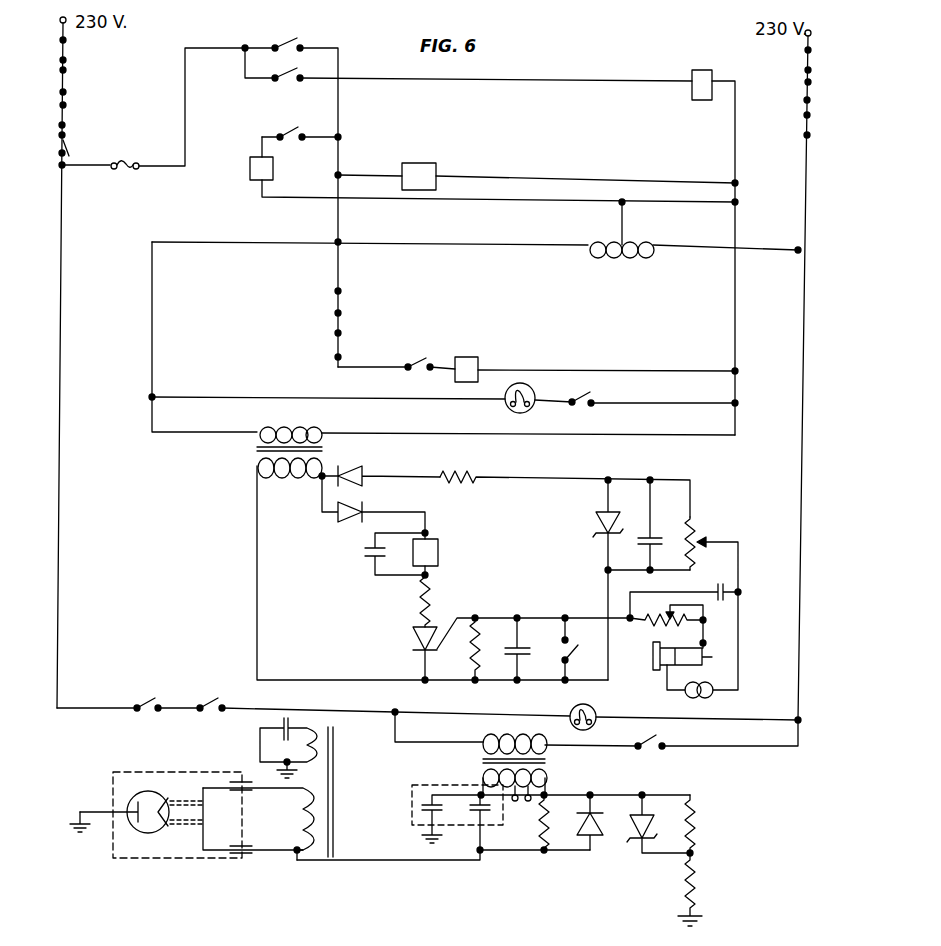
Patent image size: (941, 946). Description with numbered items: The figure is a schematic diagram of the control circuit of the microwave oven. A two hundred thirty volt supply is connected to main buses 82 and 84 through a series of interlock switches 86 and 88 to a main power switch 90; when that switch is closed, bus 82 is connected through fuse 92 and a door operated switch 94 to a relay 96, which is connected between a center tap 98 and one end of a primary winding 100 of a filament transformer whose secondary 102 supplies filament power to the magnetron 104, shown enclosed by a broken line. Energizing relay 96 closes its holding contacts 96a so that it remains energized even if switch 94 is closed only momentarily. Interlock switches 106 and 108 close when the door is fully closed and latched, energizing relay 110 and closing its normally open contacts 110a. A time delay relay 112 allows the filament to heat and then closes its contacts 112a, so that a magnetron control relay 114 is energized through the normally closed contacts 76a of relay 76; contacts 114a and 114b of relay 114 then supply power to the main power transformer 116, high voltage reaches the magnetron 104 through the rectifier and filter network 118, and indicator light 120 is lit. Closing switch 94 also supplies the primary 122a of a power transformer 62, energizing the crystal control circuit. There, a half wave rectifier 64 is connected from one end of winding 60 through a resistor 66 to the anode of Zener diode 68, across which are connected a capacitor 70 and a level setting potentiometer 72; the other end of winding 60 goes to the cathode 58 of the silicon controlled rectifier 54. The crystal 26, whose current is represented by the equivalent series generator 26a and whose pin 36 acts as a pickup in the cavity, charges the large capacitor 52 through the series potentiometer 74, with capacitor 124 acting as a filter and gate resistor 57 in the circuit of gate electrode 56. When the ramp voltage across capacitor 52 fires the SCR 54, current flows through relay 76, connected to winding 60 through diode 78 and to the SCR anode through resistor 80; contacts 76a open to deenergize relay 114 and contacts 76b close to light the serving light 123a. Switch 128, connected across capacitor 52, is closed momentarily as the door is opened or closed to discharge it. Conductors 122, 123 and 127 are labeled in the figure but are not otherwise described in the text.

The main bus 82 is at (62, 24).
The main bus 84 is at (812, 38).
The interlock switch 86 is at (66, 48).
The interlock switch 88 is at (804, 64).
The main power switch 90 is at (83, 141).
The fuse 92 is at (120, 171).
The door operated switch 94 is at (288, 40).
The relay 96 is at (694, 64).
The holding contacts 96a is at (284, 84).
The center tap 98 is at (626, 214).
The primary winding 100 is at (610, 240).
The interlock switch 106 is at (280, 132).
The relay 110 is at (250, 171).
The normally open contacts 110a is at (149, 698).
The time delay relay 112 is at (412, 164).
The contacts 112a is at (338, 345).
The magnetron control relay 114 is at (478, 359).
The contacts 114a is at (217, 698).
The contacts 114b is at (658, 748).
The main power transformer 116 is at (516, 756).
The rectifier and filter network 118 is at (591, 859).
The indicator light 120 is at (574, 716).
The power line 122 is at (802, 172).
The primary 122a is at (286, 428).
The power line 123 is at (62, 455).
The serving light 123a is at (508, 408).
The capacitor 124 is at (726, 590).
The conductor 127 is at (340, 262).
The switch 128 is at (736, 228).
The interlock switch 108 is at (338, 302).
The relay 76 is at (440, 552).
The normally closed contacts 76a is at (416, 362).
The normally open contacts 76b is at (578, 398).
The power transformer 62 is at (305, 446).
The half wave rectifier 64 is at (362, 472).
The resistor 66 is at (479, 474).
The winding 60 is at (432, 569).
The diode 78 is at (346, 524).
The resistor 80 is at (416, 602).
The silicon controlled rectifier 54 is at (414, 640).
The gate electrode 56 is at (450, 624).
The cathode 58 is at (420, 655).
The gate resistor 57 is at (468, 654).
The capacitor 52 is at (512, 636).
The Zener diode 68 is at (598, 531).
The capacitor 70 is at (646, 544).
The level setting potentiometer 72 is at (700, 524).
The series potentiometer 74 is at (652, 628).
The pin 36 is at (708, 650).
The crystal 26 is at (664, 672).
The equivalent series generator 26a is at (714, 698).
The magnetron 104 is at (150, 772).
The secondary 102 is at (300, 822).